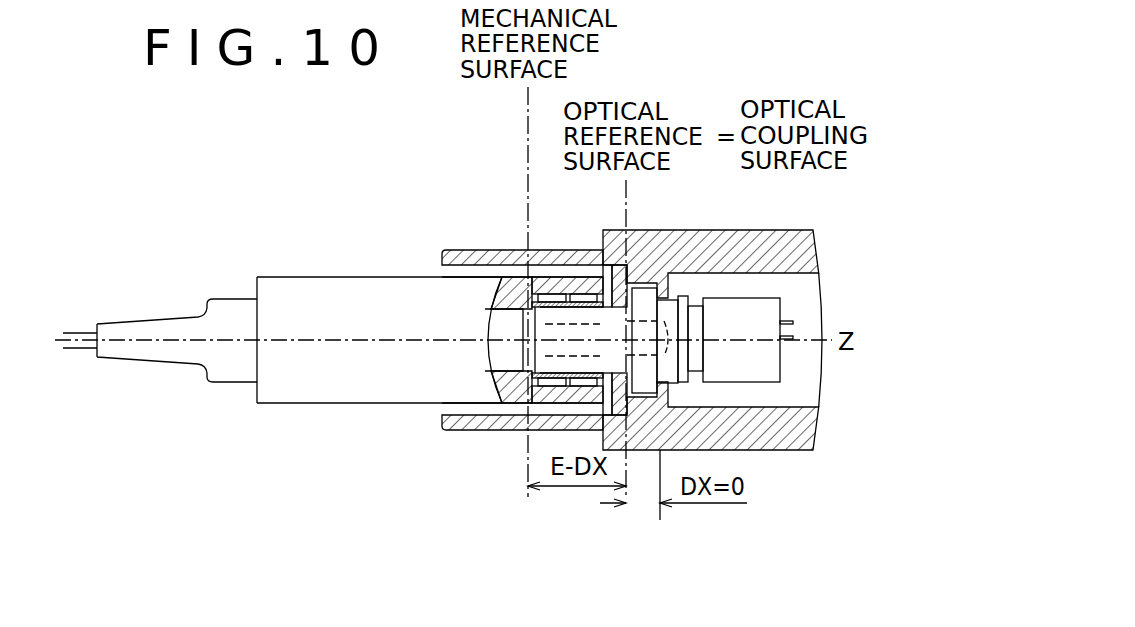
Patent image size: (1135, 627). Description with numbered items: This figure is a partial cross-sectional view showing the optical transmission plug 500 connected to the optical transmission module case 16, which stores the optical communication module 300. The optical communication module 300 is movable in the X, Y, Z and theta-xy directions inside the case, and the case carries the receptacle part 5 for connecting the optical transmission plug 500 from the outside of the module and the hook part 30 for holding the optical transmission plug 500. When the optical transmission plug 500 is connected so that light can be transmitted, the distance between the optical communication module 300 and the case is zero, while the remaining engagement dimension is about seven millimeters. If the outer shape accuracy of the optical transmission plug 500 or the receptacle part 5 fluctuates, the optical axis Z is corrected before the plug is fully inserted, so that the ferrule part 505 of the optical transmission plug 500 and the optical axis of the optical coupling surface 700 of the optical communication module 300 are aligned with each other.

The optical transmission plug 500 is at (373, 277).
The hook part 30 is at (470, 252).
The receptacle part 5 is at (471, 431).
The ferrule part 505 is at (530, 265).
The optical coupling surface 700 is at (628, 337).
The optical communication module 300 is at (782, 370).
The optical transmission module case 16 is at (777, 450).